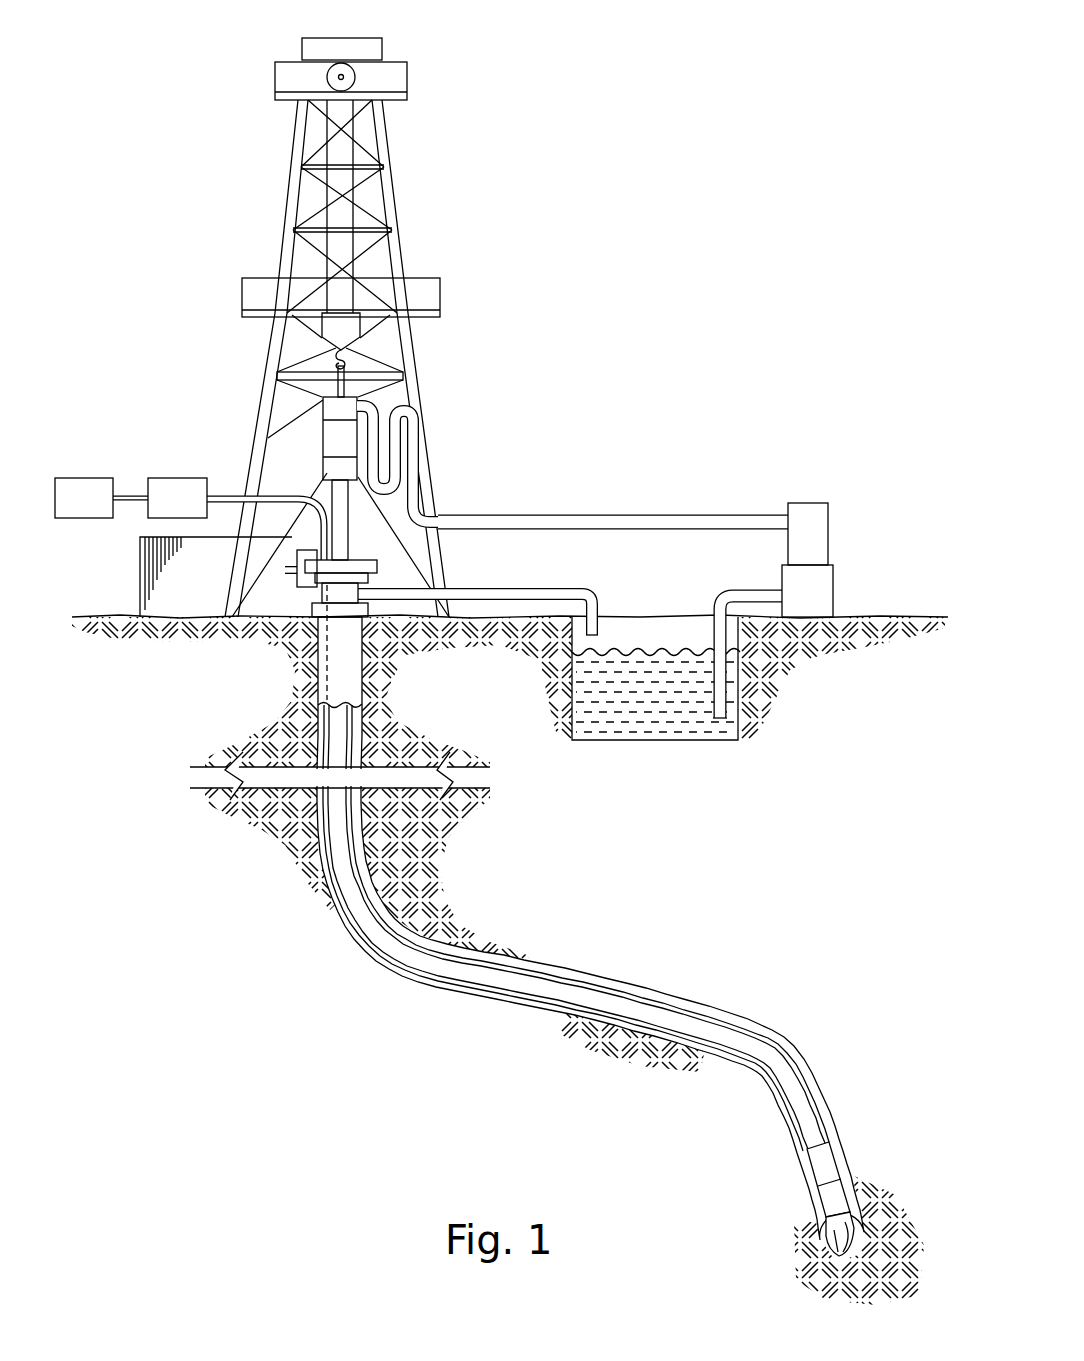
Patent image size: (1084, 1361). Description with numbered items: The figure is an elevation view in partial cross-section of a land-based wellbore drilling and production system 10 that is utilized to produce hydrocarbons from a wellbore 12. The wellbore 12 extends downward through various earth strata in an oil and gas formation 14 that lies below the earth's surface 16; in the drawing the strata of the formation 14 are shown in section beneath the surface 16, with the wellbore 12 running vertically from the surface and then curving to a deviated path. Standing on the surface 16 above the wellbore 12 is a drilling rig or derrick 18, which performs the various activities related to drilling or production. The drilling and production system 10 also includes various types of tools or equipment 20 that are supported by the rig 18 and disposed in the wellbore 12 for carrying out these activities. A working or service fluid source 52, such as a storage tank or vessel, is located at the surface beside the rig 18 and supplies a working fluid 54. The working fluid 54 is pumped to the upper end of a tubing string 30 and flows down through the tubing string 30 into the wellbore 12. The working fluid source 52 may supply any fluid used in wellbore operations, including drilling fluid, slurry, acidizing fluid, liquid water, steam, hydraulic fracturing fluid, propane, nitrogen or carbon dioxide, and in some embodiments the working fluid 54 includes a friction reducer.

The wellbore drilling and production system 10 is at (164, 81).
The wellbore 12 is at (340, 933).
The oil and gas formation 14 is at (586, 810).
The earth's surface 16 is at (882, 614).
The drilling rig or derrick 18 is at (284, 197).
The tools or equipment 20 is at (588, 980).
The tubing string 30 is at (448, 940).
The working or service fluid source 52 is at (686, 745).
The working fluid 54 is at (645, 662).